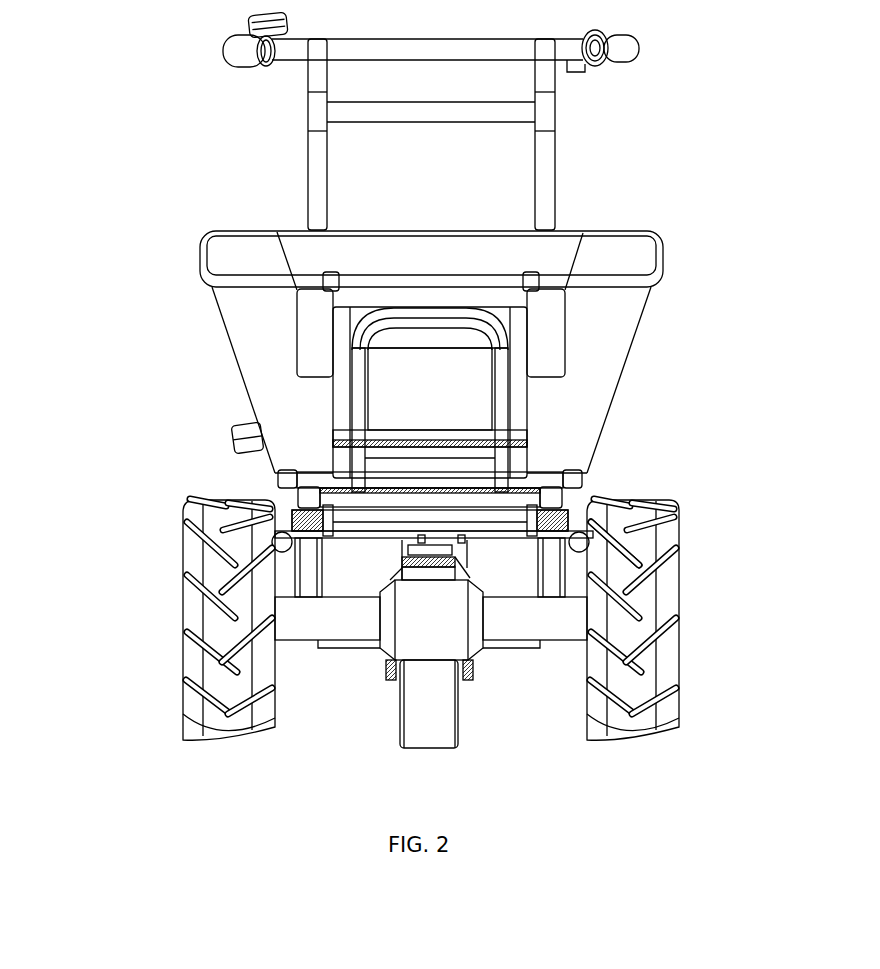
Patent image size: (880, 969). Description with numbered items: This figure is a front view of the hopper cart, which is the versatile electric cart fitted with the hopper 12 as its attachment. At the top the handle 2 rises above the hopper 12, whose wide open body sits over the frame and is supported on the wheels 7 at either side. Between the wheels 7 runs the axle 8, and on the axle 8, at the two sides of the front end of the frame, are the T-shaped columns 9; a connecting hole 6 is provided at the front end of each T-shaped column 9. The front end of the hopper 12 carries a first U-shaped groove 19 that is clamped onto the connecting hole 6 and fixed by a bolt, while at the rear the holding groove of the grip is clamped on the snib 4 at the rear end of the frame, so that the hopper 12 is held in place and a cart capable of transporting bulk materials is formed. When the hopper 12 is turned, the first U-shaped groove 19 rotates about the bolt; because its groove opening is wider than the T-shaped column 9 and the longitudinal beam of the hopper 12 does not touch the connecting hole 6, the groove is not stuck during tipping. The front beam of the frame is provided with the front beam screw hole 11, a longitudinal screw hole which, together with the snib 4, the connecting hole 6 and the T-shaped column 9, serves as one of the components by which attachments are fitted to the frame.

The handle 2 is at (369, 121).
The hopper 12 is at (471, 300).
The snib 4 is at (326, 390).
The connecting hole 6 is at (387, 453).
The first U-shaped groove 19 is at (385, 467).
The front beam screw hole 11 is at (434, 603).
The axle 8 is at (476, 641).
The wheel 7 is at (412, 619).
The T-shaped column 9 is at (657, 514).